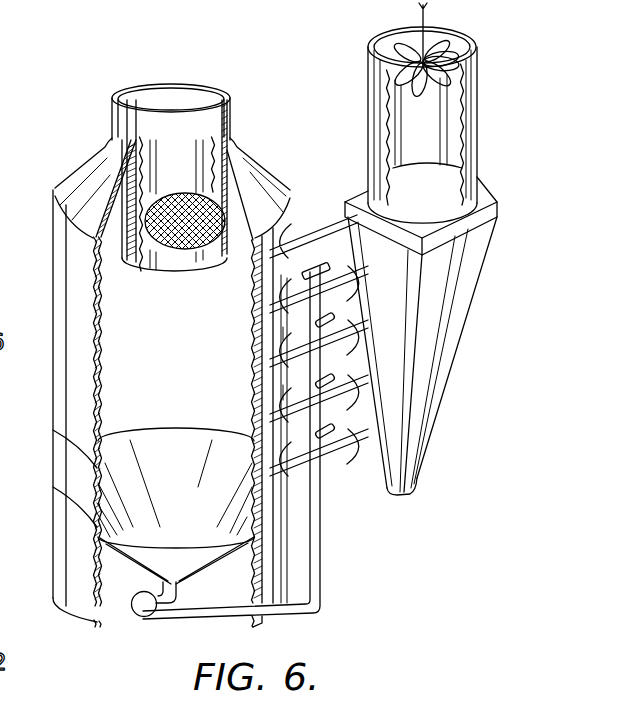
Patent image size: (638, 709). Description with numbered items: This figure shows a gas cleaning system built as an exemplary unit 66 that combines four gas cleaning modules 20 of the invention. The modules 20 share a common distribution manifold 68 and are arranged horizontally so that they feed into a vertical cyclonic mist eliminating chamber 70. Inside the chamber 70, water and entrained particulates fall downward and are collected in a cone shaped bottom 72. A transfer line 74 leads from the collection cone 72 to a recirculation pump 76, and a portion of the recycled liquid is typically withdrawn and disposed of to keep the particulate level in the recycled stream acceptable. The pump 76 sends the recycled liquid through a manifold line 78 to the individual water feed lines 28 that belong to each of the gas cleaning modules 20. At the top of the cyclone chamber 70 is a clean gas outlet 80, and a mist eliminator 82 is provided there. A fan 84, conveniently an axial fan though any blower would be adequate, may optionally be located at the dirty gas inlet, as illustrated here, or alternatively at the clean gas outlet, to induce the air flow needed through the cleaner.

The gas cleaning module 20 is at (315, 243).
The water feed line 28 is at (312, 322).
The unit 66 is at (300, 103).
The distribution manifold 68 is at (438, 384).
The cyclonic mist eliminating chamber 70 is at (73, 413).
The cone shaped bottom 72 is at (203, 562).
The transfer line 74 is at (181, 591).
The recirculation pump 76 is at (140, 592).
The manifold line 78 is at (322, 568).
The clean gas outlet 80 is at (179, 84).
The mist eliminator 82 is at (160, 262).
The fan 84 is at (426, 60).